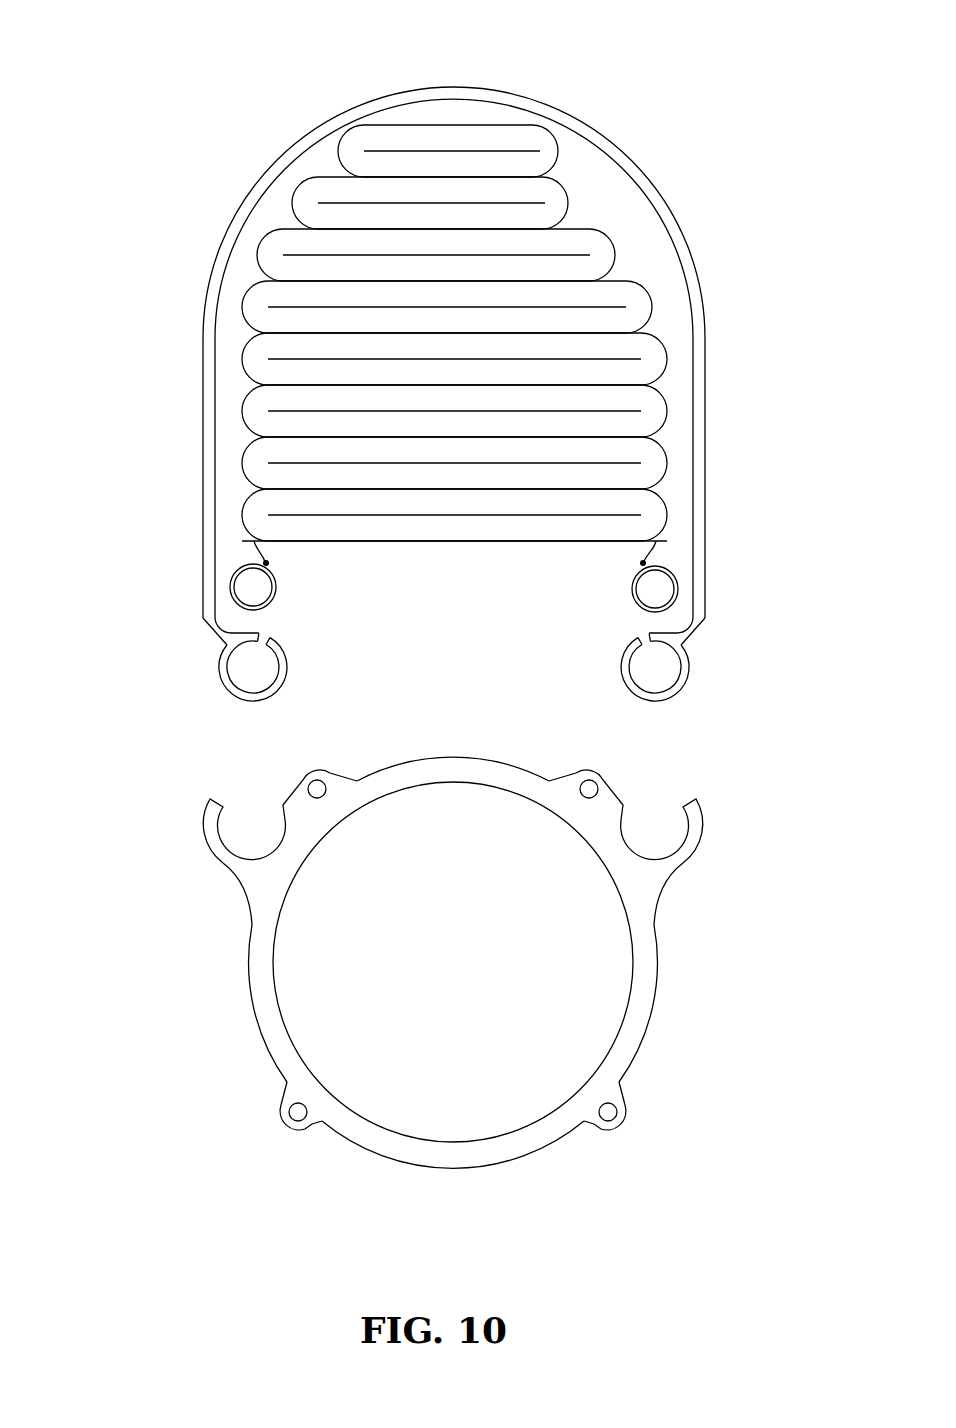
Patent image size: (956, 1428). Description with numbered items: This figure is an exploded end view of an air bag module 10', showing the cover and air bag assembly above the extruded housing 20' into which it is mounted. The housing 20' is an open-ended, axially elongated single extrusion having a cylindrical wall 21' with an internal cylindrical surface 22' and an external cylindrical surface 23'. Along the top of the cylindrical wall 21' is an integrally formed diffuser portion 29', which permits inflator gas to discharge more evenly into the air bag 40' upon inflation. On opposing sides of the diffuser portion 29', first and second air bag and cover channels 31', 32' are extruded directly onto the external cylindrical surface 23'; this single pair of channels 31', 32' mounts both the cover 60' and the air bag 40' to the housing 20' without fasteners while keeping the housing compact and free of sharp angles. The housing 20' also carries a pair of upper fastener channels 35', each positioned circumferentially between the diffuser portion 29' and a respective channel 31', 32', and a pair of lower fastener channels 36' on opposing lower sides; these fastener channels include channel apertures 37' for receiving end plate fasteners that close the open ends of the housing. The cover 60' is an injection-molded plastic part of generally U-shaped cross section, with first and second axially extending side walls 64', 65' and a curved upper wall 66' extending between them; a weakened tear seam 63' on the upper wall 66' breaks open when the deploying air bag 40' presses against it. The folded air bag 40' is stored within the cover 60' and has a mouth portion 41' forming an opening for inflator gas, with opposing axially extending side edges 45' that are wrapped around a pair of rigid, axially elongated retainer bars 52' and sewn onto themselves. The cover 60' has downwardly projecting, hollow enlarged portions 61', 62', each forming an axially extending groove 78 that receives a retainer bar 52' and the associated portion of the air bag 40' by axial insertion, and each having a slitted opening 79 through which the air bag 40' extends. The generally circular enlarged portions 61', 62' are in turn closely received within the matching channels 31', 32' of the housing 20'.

The air bag module 10' is at (459, 369).
The extruded housing 20' is at (489, 958).
The cylindrical wall 21' is at (694, 1003).
The internal cylindrical surface 22' is at (453, 1008).
The external cylindrical surface 23' is at (222, 1003).
The diffuser portion 29' is at (457, 732).
The first air bag and cover channel 31' is at (745, 862).
The second air bag and cover channel 32' is at (197, 862).
The upper fastener channels 35' is at (513, 763).
The lower fastener channels 36' is at (457, 1154).
The channel apertures 37' is at (460, 930).
The air bag 40' is at (421, 379).
The mouth portion 41' is at (454, 587).
The side edges 45' is at (459, 524).
The retainer bars 52' is at (518, 575).
The cover 60' is at (469, 369).
The first enlarged portion 61' is at (729, 618).
The second enlarged portion 62' is at (181, 635).
The weakened tear seam 63' is at (454, 182).
The first side wall 64' is at (770, 462).
The second side wall 65' is at (154, 462).
The curved upper wall 66' is at (454, 321).
The grooves 78 is at (253, 688).
The slitted opening 79 is at (274, 633).